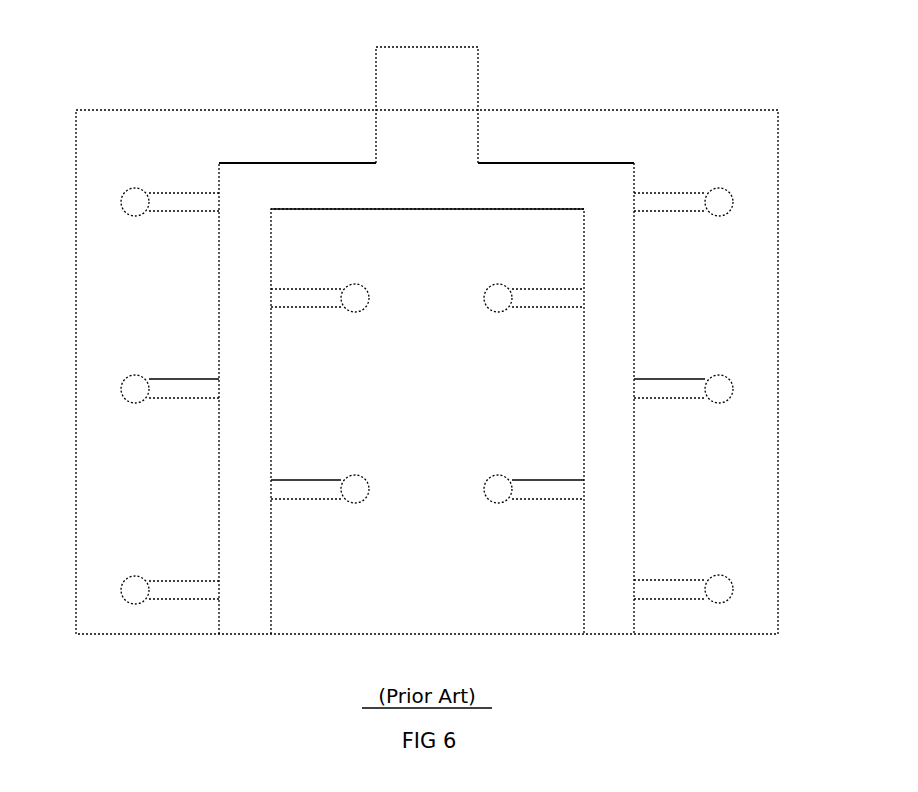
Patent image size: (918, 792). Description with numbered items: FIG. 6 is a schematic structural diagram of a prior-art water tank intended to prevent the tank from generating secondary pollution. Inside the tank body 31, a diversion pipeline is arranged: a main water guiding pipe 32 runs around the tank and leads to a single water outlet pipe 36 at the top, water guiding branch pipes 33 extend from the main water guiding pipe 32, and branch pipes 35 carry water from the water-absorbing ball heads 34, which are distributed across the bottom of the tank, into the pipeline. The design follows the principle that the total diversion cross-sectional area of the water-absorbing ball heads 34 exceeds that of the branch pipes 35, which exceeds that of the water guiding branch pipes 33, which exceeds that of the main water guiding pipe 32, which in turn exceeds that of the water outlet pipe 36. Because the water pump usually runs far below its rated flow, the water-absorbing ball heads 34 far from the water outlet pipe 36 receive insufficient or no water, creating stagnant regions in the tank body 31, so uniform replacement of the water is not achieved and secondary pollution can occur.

The tank body 31 is at (748, 312).
The main water guiding pipe 32 is at (298, 178).
The water guiding branch pipe 33 is at (238, 269).
The water-absorbing ball head 34 is at (720, 589).
The branch pipe 35 is at (180, 389).
The water outlet pipe 36 is at (453, 68).